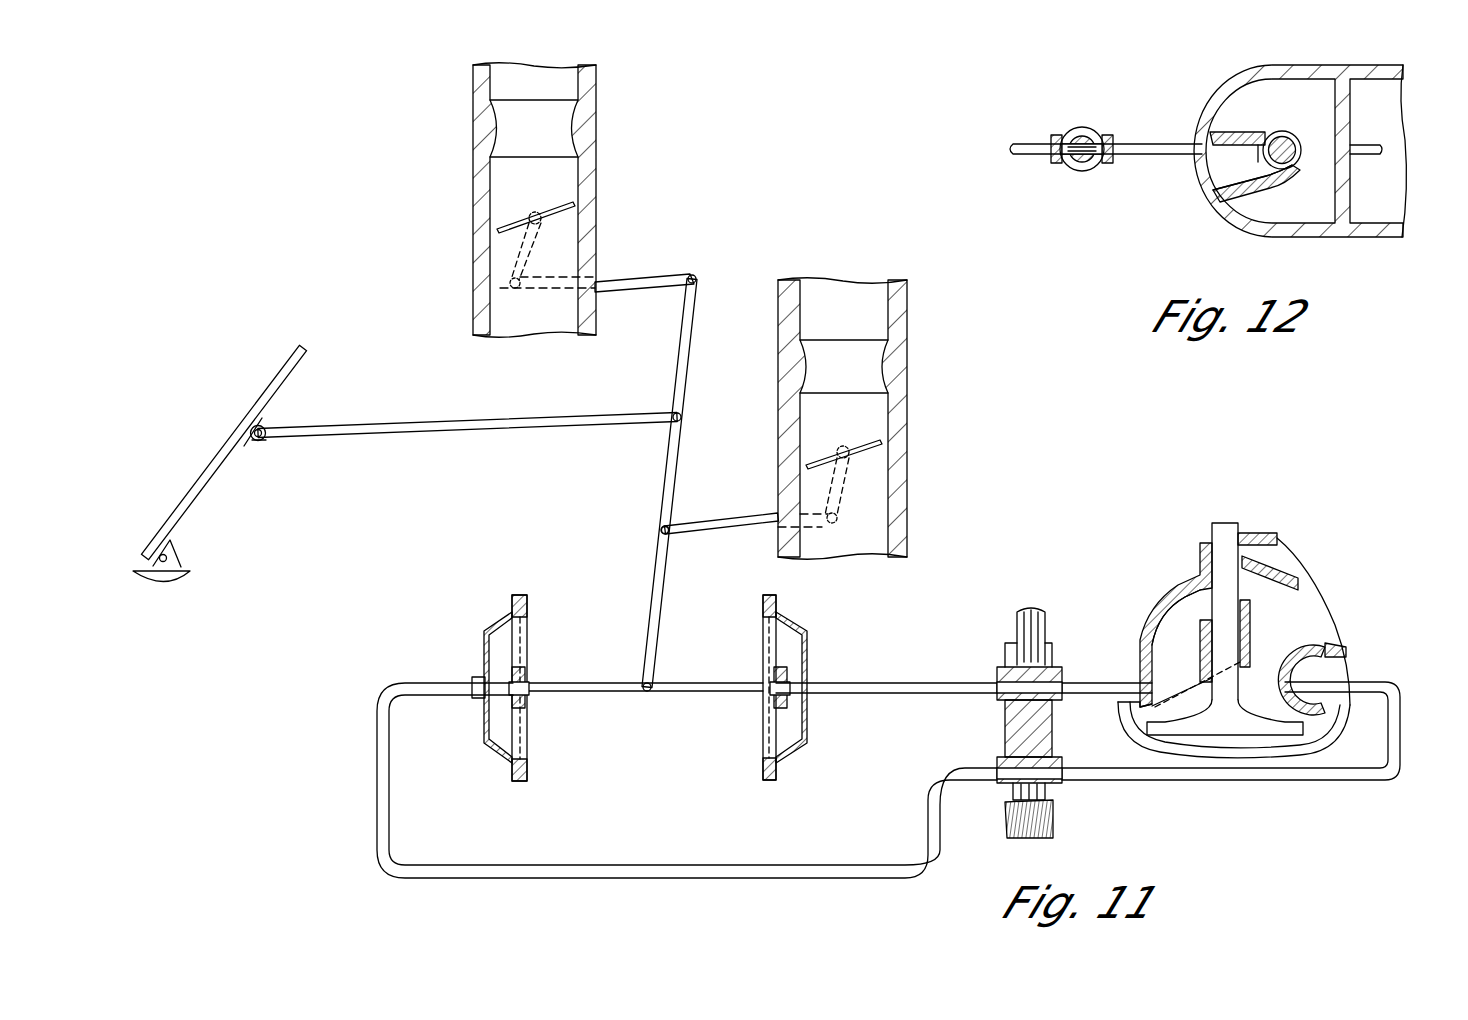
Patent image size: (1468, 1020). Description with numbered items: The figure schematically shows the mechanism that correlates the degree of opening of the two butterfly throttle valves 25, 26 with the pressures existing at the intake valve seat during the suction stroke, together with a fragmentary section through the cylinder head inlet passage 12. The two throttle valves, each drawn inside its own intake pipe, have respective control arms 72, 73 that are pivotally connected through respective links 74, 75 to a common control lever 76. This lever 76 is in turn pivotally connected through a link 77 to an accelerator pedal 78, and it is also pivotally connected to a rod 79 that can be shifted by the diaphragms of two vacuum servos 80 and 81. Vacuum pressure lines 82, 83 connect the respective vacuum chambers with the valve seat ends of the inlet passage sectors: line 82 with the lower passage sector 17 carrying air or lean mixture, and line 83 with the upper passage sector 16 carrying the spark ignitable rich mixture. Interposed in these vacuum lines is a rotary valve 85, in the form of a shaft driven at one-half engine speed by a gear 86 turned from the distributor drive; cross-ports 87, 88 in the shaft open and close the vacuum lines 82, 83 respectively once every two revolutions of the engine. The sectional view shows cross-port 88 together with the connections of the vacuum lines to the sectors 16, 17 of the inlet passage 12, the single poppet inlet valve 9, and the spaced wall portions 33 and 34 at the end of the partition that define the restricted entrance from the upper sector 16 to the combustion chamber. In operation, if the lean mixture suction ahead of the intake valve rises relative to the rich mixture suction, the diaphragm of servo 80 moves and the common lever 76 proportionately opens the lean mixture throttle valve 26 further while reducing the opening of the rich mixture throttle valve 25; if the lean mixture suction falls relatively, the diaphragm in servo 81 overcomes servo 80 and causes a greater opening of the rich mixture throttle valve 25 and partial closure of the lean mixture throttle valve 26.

In FIG. 12, the inlet valve 9 is at (1286, 140).
In FIG. 11, the inlet passage 12 is at (1135, 668).
In FIG. 12, the inlet passage 12 is at (1213, 102).
In FIG. 11, the upper passage sector 16 is at (1183, 615).
In FIG. 12, the upper passage sector 16 is at (1225, 166).
In FIG. 11, the lower passage sector 17 is at (1297, 608).
In FIG. 12, the lower passage sector 17 is at (1300, 195).
In FIG. 11, the throttle valve 25 is at (882, 442).
In FIG. 11, the throttle valve 26 is at (575, 204).
In FIG. 12, the wall portion 33 is at (1260, 132).
In FIG. 12, the wall portion 34 is at (1240, 206).
In FIG. 11, the control arm 72 is at (843, 491).
In FIG. 11, the control arm 73 is at (512, 250).
In FIG. 11, the link 74 is at (730, 527).
In FIG. 11, the link 75 is at (658, 283).
In FIG. 11, the common control lever 76 is at (680, 379).
In FIG. 11, the link 77 is at (422, 415).
In FIG. 11, the accelerator pedal 78 is at (300, 352).
In FIG. 11, the rod 79 is at (598, 686).
In FIG. 11, the vacuum servo 80 is at (483, 630).
In FIG. 11, the vacuum servo 81 is at (807, 630).
In FIG. 11, the vacuum pressure line 82 is at (648, 865).
In FIG. 12, the vacuum pressure line 82 is at (1378, 150).
In FIG. 11, the vacuum pressure line 83 is at (856, 683).
In FIG. 12, the vacuum pressure line 83 is at (1025, 156).
In FIG. 11, the rotary valve 85 is at (1028, 612).
In FIG. 12, the rotary valve 85 is at (1090, 133).
In FIG. 11, the gear 86 is at (1050, 808).
In FIG. 11, the cross-port 87 is at (1035, 768).
In FIG. 11, the cross-port 88 is at (1042, 683).
In FIG. 12, the cross-port 88 is at (1084, 168).